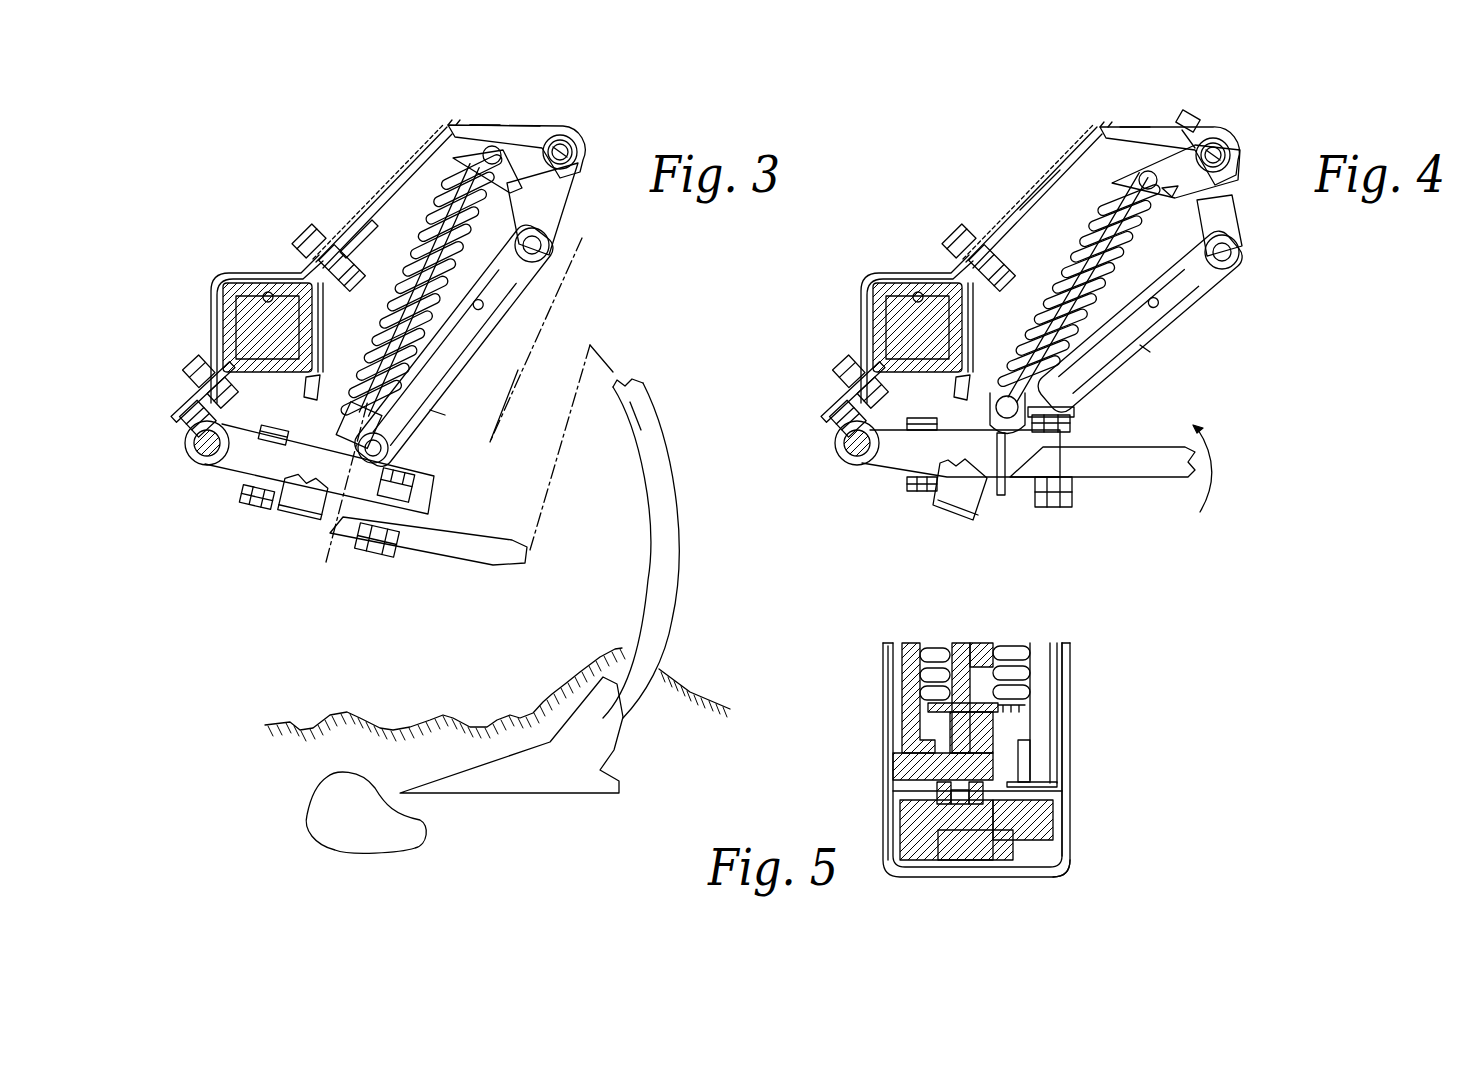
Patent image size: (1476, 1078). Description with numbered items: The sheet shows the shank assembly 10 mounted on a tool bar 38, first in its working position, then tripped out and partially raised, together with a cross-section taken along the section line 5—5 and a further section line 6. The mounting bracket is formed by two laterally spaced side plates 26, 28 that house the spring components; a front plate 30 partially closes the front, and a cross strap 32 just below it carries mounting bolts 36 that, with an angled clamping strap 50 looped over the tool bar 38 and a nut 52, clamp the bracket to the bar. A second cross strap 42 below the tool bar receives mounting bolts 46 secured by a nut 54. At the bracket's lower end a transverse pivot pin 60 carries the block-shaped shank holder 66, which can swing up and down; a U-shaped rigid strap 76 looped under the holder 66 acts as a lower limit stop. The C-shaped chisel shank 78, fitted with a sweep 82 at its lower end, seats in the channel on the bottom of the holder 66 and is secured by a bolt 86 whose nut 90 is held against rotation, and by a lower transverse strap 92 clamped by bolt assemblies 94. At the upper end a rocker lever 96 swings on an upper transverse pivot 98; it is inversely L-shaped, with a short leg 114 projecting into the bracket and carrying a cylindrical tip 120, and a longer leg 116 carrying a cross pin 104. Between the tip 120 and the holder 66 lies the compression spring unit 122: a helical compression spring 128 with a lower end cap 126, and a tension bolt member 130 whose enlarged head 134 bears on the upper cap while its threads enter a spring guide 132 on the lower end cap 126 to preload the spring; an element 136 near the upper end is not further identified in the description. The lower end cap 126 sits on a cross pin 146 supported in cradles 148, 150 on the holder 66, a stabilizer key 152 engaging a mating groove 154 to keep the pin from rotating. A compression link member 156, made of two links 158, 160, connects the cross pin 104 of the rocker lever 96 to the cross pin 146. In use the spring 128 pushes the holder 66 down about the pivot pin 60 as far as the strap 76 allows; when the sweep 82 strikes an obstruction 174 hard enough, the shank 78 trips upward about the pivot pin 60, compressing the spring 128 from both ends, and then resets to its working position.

In FIG. 3, the section line 5— 5 is at (416, 363).
In FIG. 3, the section line 6- 6 is at (591, 240).
In FIG. 3, the shank assembly 10 is at (305, 140).
In FIG. 4, the shank assembly 10 is at (955, 142).
In FIG. 3, the side plate 26 is at (410, 190).
In FIG. 4, the side plate 26 is at (1060, 157).
In FIG. 5, the side plate 26 is at (1067, 847).
In FIG. 5, the side plate 28 is at (883, 678).
In FIG. 3, the front plate 30 is at (417, 158).
In FIG. 4, the front plate 30 is at (1082, 143).
In FIG. 3, the cross strap 32 is at (363, 240).
In FIG. 3, the mounting bolts 36 is at (318, 228).
In FIG. 4, the mounting bolts 36 is at (967, 232).
In FIG. 3, the tool bar 38 is at (272, 292).
In FIG. 4, the tool bar 38 is at (922, 305).
In FIG. 3, the second cross strap 42 is at (170, 410).
In FIG. 4, the second cross strap 42 is at (823, 413).
In FIG. 3, the mounting bolts 46 is at (185, 363).
In FIG. 4, the mounting bolts 46 is at (830, 365).
In FIG. 3, the angled clamping strap 50 is at (220, 277).
In FIG. 4, the angled clamping strap 50 is at (870, 282).
In FIG. 3, the nut 52 is at (330, 288).
In FIG. 3, the nut 54 is at (230, 368).
In FIG. 4, the nut 54 is at (870, 369).
In FIG. 3, the transverse pivot pin 60 is at (197, 457).
In FIG. 4, the transverse pivot pin 60 is at (843, 457).
In FIG. 3, the shank holder 66 is at (211, 483).
In FIG. 4, the shank holder 66 is at (862, 483).
In FIG. 5, the shank holder 66 is at (908, 870).
In FIG. 3, the rigid strap 76 is at (315, 515).
In FIG. 4, the rigid strap 76 is at (967, 508).
In FIG. 5, the rigid strap 76 is at (1053, 877).
In FIG. 3, the chisel shank 78 is at (478, 565).
In FIG. 4, the chisel shank 78 is at (1120, 470).
In FIG. 5, the chisel shank 78 is at (947, 853).
In FIG. 3, the sweep 82 is at (523, 777).
In FIG. 3, the bolt 86 is at (258, 500).
In FIG. 4, the bolt 86 is at (923, 482).
In FIG. 3, the nut 90 is at (270, 433).
In FIG. 4, the nut 90 is at (913, 430).
In FIG. 3, the lower transverse strap 92 is at (392, 542).
In FIG. 4, the lower transverse strap 92 is at (1067, 493).
In FIG. 3, the bolt assemblies 94 is at (378, 556).
In FIG. 4, the bolt assemblies 94 is at (1052, 508).
In FIG. 3, the rocker lever 96 is at (503, 122).
In FIG. 3, the upper transverse pivot 98 is at (572, 140).
In FIG. 4, the upper transverse pivot 98 is at (1230, 147).
In FIG. 3, the cross pin 104 is at (541, 240).
In FIG. 4, the cross pin 104 is at (1235, 240).
In FIG. 3, the short leg 114 is at (530, 143).
In FIG. 4, the short leg 114 is at (1197, 142).
In FIG. 3, the longer leg 116 is at (545, 193).
In FIG. 4, the longer leg 116 is at (1213, 212).
In FIG. 3, the cylindrical tip 120 is at (493, 146).
In FIG. 4, the cylindrical tip 120 is at (1150, 170).
In FIG. 4, the compression spring unit 122 is at (1075, 205).
In FIG. 3, the lower end cap 126 is at (350, 425).
In FIG. 4, the lower end cap 126 is at (1020, 410).
In FIG. 5, the lower end cap 126 is at (997, 728).
In FIG. 3, the helical compression spring 128 is at (397, 256).
In FIG. 4, the helical compression spring 128 is at (1078, 286).
In FIG. 5, the helical compression spring 128 is at (925, 640).
In FIG. 4, the tension bolt member 130 is at (1180, 133).
In FIG. 5, the tension bolt member 130 is at (980, 643).
In FIG. 3, the spring guide 132 is at (403, 272).
In FIG. 4, the spring guide 132 is at (1067, 256).
In FIG. 5, the spring guide 132 is at (957, 640).
In FIG. 4, the enlarged head 134 is at (1182, 115).
In FIG. 3, the wedge 136 is at (451, 141).
In FIG. 4, the wedge 136 is at (1172, 193).
In FIG. 3, the cross pin 146 is at (384, 447).
In FIG. 5, the cross pin 146 is at (1057, 753).
In FIG. 5, the cradle 148 is at (1020, 790).
In FIG. 5, the cradle 150 is at (933, 788).
In FIG. 4, the stabilizer key 152 is at (1001, 440).
In FIG. 5, the stabilizer key 152 is at (987, 792).
In FIG. 4, the mating groove 154 is at (1060, 412).
In FIG. 3, the compression link member 156 is at (432, 408).
In FIG. 4, the compression link member 156 is at (1146, 348).
In FIG. 5, the link 158 is at (903, 723).
In FIG. 3, the link 160 is at (468, 337).
In FIG. 4, the link 160 is at (1173, 298).
In FIG. 5, the link 160 is at (1047, 675).
In FIG. 3, the obstruction 174 is at (383, 845).